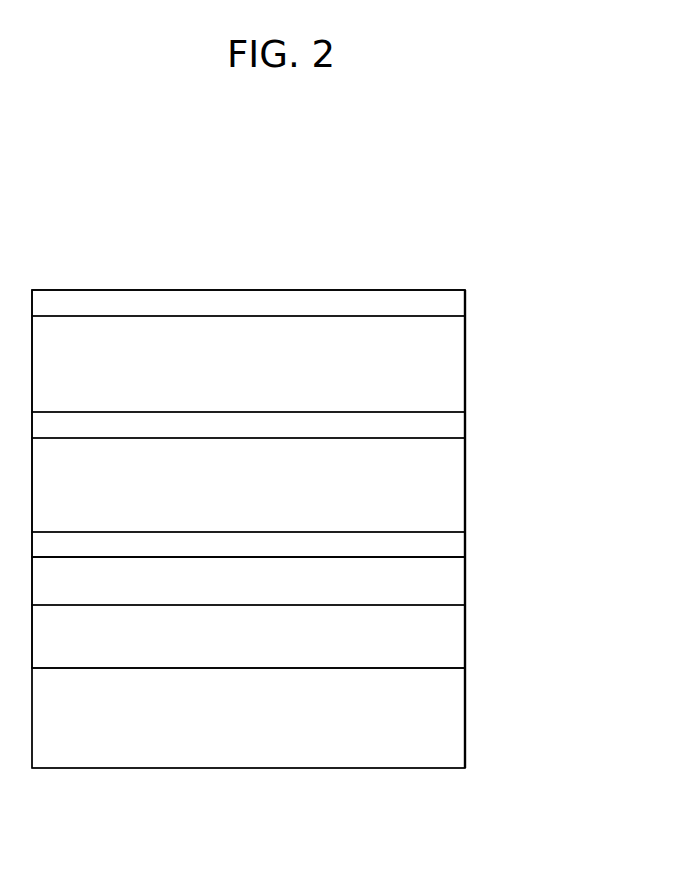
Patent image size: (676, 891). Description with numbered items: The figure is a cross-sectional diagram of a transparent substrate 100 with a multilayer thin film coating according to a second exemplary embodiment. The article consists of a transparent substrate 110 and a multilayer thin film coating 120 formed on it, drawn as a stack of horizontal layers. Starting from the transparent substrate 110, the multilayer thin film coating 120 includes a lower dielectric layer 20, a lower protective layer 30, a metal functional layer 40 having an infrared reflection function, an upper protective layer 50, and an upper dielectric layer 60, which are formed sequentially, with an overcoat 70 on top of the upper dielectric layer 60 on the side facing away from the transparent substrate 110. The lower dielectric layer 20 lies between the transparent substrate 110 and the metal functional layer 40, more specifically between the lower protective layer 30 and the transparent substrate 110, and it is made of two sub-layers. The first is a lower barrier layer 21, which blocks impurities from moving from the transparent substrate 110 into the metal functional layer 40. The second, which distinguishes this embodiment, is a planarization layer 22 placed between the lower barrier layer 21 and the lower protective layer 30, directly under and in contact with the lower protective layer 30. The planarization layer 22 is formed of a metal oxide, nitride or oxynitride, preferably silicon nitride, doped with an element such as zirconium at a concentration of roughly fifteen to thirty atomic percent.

The transparent substrate with the multilayer thin film coating 100 is at (264, 234).
The transparent substrate 110 is at (466, 720).
The multilayer thin film coating 120 is at (548, 293).
The lower dielectric layer 20 is at (515, 573).
The lower barrier layer 21 is at (466, 637).
The planarization layer 22 is at (466, 585).
The lower protective layer 30 is at (466, 547).
The metal functional layer 40 is at (466, 485).
The upper protective layer 50 is at (466, 427).
The upper dielectric layer 60 is at (466, 363).
The overcoat 70 is at (466, 303).